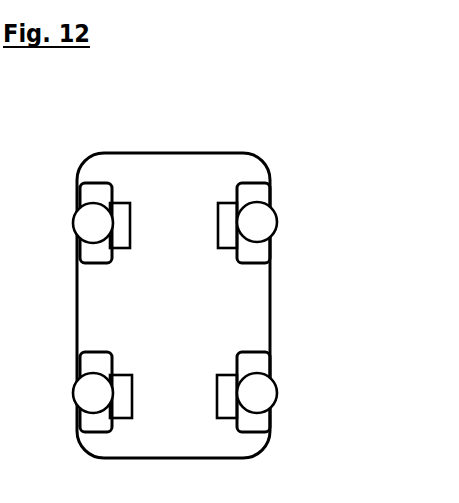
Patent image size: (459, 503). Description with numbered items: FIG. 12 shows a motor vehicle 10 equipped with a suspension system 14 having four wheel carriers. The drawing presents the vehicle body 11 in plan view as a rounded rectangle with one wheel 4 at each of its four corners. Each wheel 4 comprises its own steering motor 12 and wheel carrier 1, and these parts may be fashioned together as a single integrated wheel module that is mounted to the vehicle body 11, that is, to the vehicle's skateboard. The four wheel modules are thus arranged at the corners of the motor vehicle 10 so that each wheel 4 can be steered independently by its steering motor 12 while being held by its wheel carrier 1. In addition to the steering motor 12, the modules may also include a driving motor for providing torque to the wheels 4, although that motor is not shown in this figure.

The motor vehicle 10 is at (170, 252).
The vehicle body 11 is at (133, 153).
The suspension system 14 is at (279, 168).
The steering motor 12 is at (82, 222).
The wheel carrier 1 is at (120, 230).
The wheel 4 is at (260, 192).